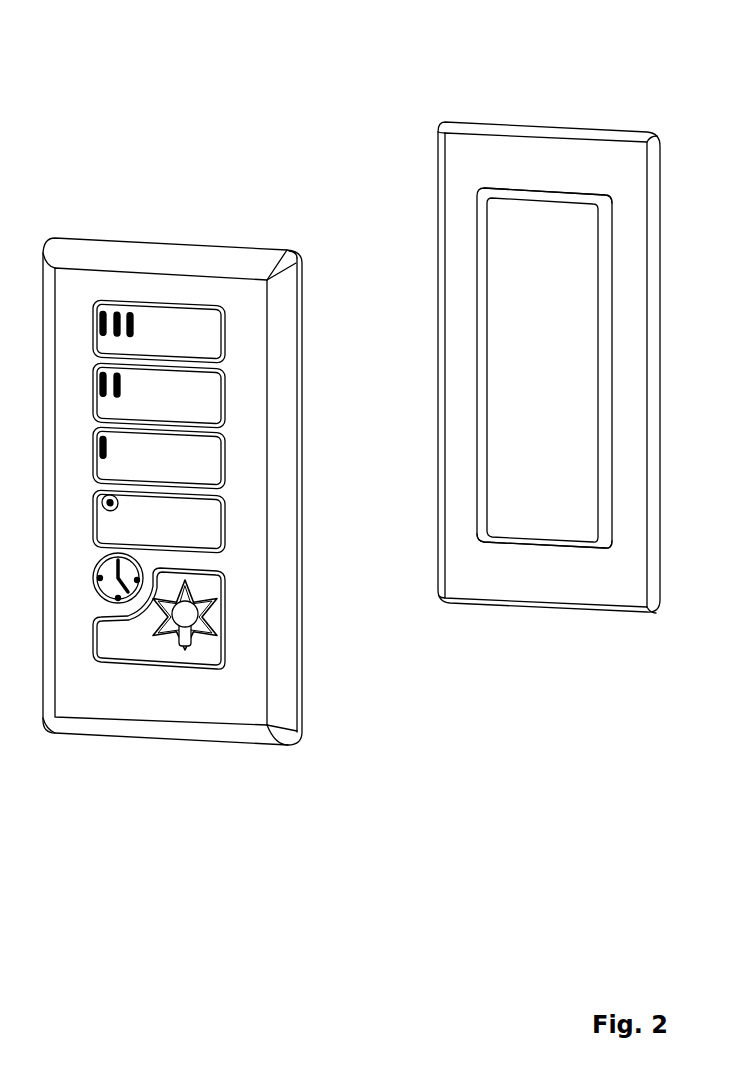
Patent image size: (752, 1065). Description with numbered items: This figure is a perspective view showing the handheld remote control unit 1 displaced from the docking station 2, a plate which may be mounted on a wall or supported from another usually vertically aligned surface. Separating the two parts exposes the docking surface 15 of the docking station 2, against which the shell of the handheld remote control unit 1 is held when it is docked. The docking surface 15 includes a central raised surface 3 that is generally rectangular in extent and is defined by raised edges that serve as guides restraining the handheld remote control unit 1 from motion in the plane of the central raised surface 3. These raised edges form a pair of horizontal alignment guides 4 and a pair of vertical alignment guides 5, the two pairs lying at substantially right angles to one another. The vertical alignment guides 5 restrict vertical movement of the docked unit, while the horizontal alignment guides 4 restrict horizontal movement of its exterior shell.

The handheld remote control unit 1 is at (202, 760).
The docking station 2 is at (512, 408).
The central raised surface 3 is at (523, 403).
The horizontal alignment guides 4 is at (485, 320).
The vertical alignment guides 5 is at (553, 193).
The docking surface 15 is at (577, 580).